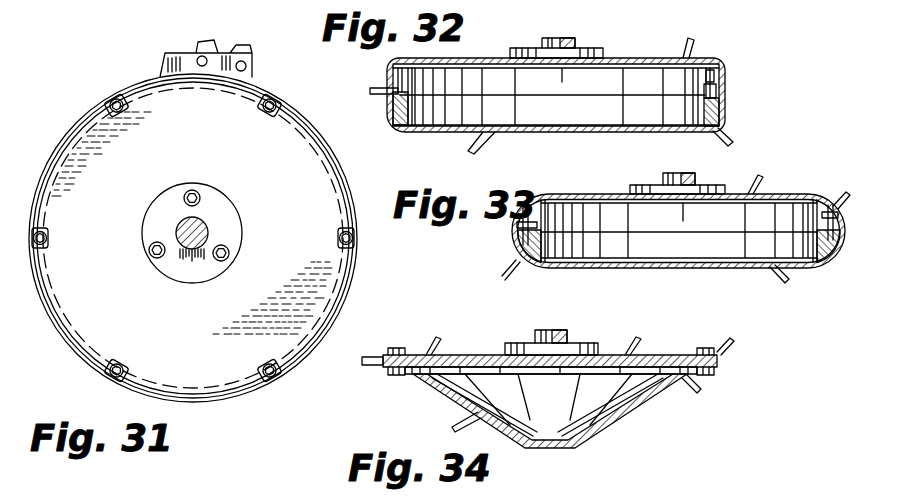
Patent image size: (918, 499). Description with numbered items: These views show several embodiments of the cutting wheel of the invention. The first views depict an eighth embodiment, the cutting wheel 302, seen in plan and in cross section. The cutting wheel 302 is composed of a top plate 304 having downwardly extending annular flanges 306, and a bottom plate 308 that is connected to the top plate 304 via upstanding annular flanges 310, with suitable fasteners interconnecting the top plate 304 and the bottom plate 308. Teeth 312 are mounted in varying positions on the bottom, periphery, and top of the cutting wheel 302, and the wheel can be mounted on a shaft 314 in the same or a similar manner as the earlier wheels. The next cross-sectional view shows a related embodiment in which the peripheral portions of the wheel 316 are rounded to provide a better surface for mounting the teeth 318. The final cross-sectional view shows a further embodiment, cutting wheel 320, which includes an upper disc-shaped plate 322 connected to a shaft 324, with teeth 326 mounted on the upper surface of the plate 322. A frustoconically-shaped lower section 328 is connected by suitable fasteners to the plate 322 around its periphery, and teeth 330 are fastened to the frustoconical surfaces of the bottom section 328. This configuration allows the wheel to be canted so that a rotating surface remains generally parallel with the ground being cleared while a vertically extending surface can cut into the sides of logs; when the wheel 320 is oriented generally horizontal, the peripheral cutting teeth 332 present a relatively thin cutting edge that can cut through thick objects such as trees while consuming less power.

In FIG. 31, the cutting wheel 302 is at (100, 158).
In FIG. 32, the cutting wheel 302 is at (632, 55).
In FIG. 32, the top plate 304 is at (720, 60).
In FIG. 31, the annular flanges 306 is at (47, 246).
In FIG. 32, the annular flanges 306 is at (722, 72).
In FIG. 32, the bottom plate 308 is at (705, 130).
In FIG. 31, the annular flanges 310 is at (355, 243).
In FIG. 32, the annular flanges 310 is at (722, 108).
In FIG. 32, the teeth 312 is at (692, 46).
In FIG. 31, the shaft 314 is at (206, 226).
In FIG. 32, the shaft 314 is at (548, 38).
In FIG. 33, the wheel 316 is at (804, 191).
In FIG. 33, the teeth 318 is at (838, 202).
In FIG. 34, the cutting wheel 320 is at (714, 387).
In FIG. 34, the upper disc-shaped plate 322 is at (655, 355).
In FIG. 34, the shaft 324 is at (565, 334).
In FIG. 34, the teeth 326 is at (628, 354).
In FIG. 34, the frustoconically-shaped lower section 328 is at (618, 428).
In FIG. 34, the teeth 330 is at (692, 392).
In FIG. 34, the peripheral cutting teeth 332 is at (733, 343).